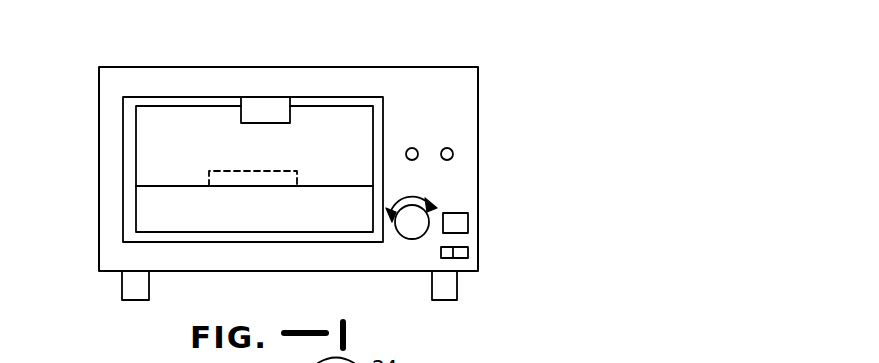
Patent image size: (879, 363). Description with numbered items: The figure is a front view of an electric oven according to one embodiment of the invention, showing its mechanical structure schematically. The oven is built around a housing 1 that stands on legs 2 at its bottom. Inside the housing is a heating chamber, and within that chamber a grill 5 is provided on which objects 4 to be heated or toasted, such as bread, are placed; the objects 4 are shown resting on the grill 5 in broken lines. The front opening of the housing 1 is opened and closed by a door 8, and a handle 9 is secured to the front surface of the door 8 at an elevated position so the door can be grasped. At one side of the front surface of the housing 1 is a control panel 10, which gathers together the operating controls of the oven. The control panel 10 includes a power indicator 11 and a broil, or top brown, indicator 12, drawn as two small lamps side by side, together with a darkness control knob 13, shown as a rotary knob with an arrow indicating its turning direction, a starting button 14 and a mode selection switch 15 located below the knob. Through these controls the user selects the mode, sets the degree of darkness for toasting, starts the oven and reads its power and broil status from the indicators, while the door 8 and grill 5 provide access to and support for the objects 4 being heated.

The housing 1 is at (99, 137).
The legs 2 is at (134, 284).
The objects to be heated 4 is at (276, 170).
The grill 5 is at (160, 186).
The door 8 is at (183, 106).
The handle 9 is at (271, 105).
The control panel 10 is at (468, 78).
The power indicator 11 is at (418, 150).
The broil indicator 12 is at (453, 153).
The darkness control knob 13 is at (407, 230).
The starting button 14 is at (468, 218).
The mode selection switch 15 is at (453, 258).